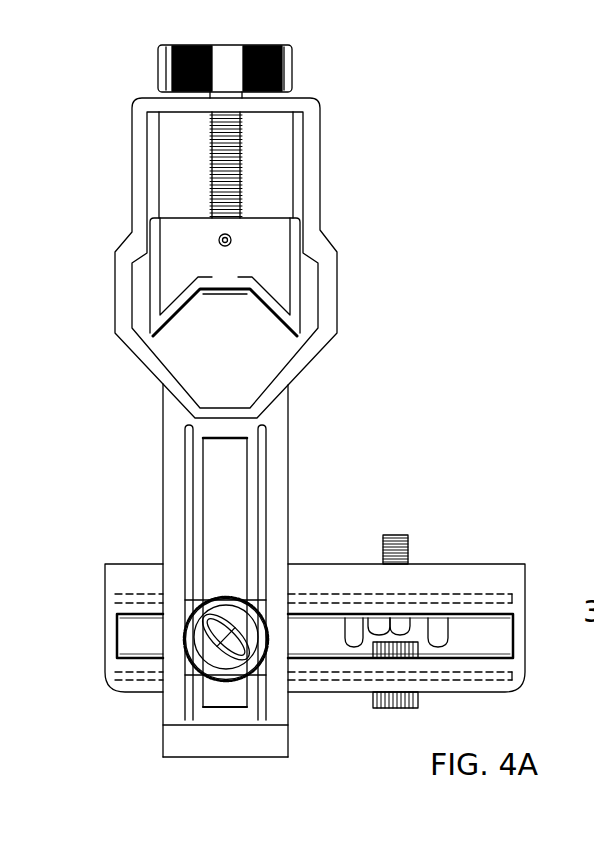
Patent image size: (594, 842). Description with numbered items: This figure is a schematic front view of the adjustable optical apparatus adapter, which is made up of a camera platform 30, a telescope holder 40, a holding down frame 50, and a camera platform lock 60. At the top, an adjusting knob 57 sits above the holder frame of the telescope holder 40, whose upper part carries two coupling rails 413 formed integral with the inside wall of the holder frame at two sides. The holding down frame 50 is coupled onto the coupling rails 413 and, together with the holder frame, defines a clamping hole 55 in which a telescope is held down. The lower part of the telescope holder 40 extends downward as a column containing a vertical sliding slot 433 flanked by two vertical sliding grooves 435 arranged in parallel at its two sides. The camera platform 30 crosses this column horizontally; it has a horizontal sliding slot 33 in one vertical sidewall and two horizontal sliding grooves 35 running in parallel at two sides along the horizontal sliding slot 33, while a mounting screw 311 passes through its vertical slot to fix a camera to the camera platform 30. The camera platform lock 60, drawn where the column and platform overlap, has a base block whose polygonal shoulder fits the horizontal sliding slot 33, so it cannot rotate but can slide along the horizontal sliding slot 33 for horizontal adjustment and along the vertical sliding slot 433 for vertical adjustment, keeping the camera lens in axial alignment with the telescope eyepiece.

The adjusting knob 57 is at (292, 72).
The coupling rails 413 is at (295, 182).
The telescope holder 40 is at (335, 247).
The holding down frame 50 is at (157, 282).
The clamping hole 55 is at (217, 347).
The vertical sliding grooves 435 is at (262, 443).
The vertical sliding slot 433 is at (233, 537).
The mounting screw 311 is at (407, 537).
The camera platform 30 is at (523, 563).
The horizontal sliding slot 33 is at (130, 635).
The horizontal sliding grooves 35 is at (138, 682).
The camera platform lock 60 is at (260, 662).